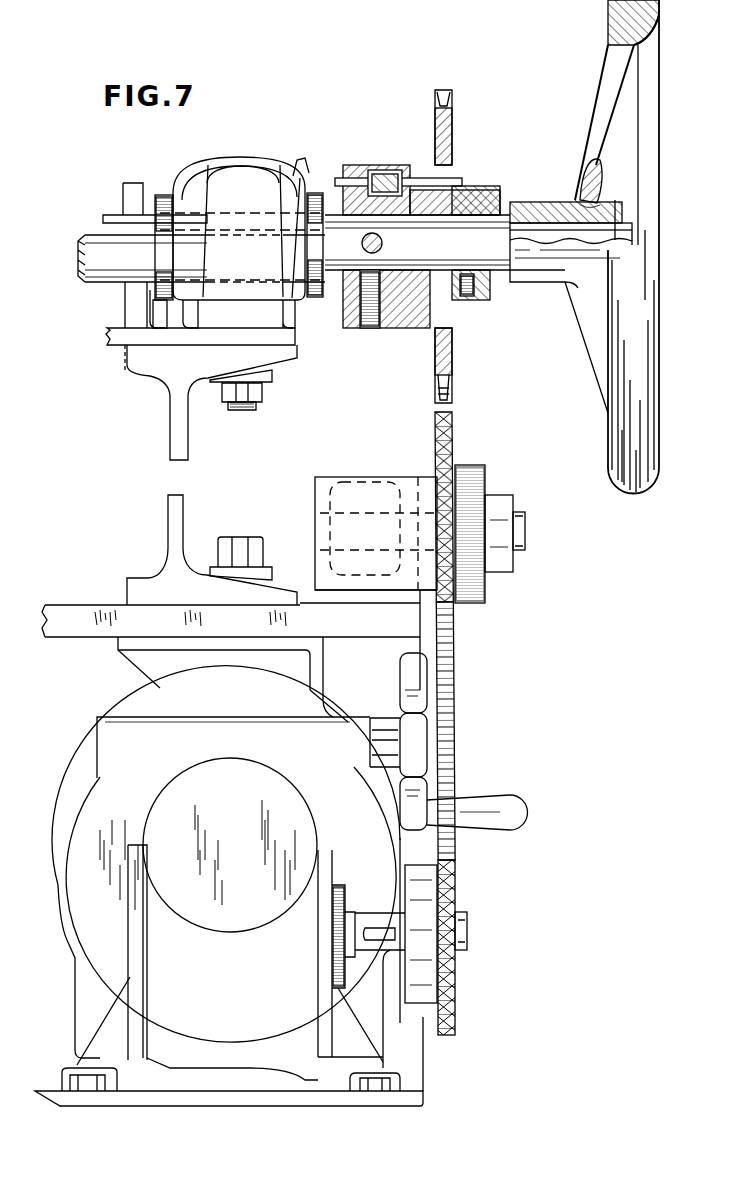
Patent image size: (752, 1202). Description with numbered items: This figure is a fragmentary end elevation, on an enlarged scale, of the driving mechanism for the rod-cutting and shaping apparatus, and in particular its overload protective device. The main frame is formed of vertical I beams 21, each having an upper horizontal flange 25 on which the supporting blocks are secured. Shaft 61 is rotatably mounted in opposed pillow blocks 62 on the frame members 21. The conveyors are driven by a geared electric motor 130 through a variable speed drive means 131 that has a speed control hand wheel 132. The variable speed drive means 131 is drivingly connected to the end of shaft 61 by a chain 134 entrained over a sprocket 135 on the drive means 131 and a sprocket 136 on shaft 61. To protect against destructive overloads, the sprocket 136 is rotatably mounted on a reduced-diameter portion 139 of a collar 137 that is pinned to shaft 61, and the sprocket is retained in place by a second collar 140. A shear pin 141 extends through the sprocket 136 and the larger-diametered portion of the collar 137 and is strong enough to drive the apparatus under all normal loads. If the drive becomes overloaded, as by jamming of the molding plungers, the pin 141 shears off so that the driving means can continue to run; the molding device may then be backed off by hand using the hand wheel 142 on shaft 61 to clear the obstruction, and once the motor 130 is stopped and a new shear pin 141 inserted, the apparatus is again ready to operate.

The I beam 21 is at (185, 532).
The upper horizontal flange 25 is at (195, 372).
The shaft 61 is at (92, 284).
The pillow block 62 is at (205, 291).
The geared electric motor 130 is at (147, 708).
The variable speed drive means 131 is at (102, 735).
The speed control hand wheel 132 is at (418, 768).
The chain 134 is at (455, 432).
The sprocket 135 is at (462, 1025).
The sprocket 136 is at (450, 362).
The collar 137 is at (338, 327).
The reduced-diameter portion 139 is at (408, 200).
The collar 140 is at (520, 204).
The shear pin 141 is at (345, 178).
The hand wheel 142 is at (616, 450).